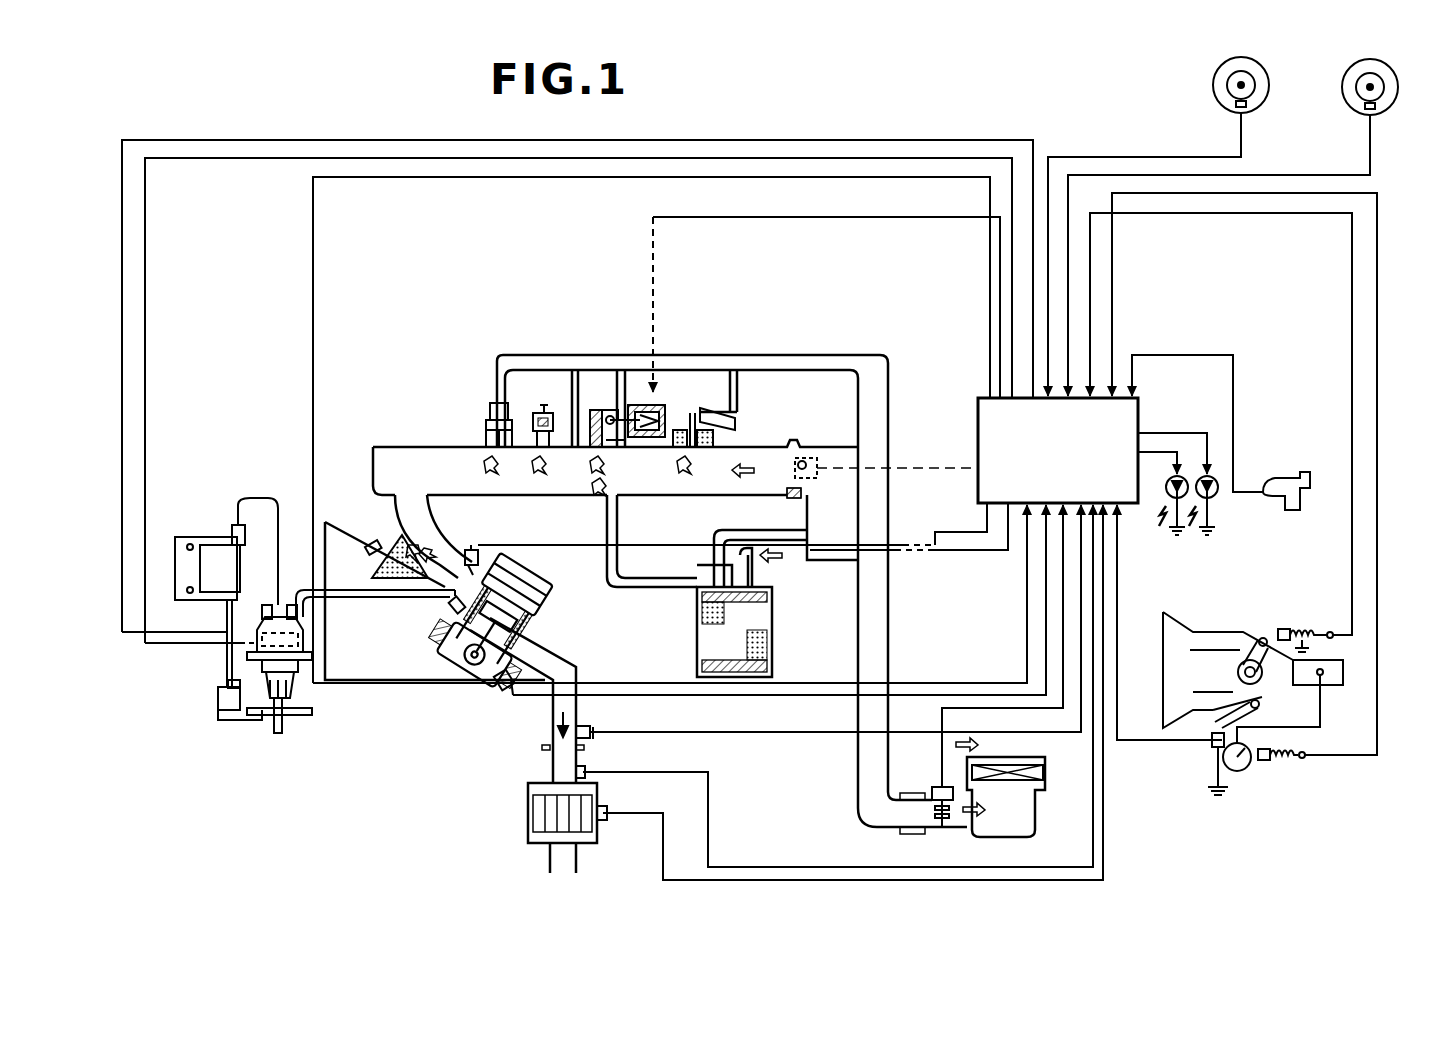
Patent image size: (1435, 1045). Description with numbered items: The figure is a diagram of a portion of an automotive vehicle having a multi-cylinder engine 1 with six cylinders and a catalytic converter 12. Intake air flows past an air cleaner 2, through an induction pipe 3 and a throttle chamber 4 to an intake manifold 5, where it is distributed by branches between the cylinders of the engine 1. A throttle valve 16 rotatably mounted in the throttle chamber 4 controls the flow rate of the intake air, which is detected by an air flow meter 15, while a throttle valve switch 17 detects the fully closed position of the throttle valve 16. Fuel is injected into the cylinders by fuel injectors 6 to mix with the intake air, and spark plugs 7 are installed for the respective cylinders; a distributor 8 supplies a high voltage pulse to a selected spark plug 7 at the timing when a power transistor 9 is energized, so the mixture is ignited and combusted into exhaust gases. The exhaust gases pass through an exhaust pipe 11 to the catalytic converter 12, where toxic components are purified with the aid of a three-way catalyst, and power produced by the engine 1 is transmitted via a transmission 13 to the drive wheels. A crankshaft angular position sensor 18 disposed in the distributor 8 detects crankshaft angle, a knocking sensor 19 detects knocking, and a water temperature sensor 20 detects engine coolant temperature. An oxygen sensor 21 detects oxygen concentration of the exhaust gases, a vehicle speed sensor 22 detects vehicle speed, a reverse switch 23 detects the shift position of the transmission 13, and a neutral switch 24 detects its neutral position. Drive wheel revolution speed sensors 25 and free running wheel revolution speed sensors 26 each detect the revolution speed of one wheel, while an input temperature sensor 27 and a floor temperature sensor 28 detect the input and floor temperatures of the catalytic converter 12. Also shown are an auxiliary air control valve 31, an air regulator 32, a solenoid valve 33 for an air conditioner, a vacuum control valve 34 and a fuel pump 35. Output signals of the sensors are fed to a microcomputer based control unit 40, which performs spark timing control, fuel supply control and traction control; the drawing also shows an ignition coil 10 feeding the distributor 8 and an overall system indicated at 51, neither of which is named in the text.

The multi-cylinder engine 1 is at (548, 594).
The air cleaner 2 is at (1018, 742).
The induction pipe 3 is at (858, 755).
The throttle chamber 4 is at (806, 458).
The intake manifold 5 is at (400, 446).
The fuel injectors 6 is at (483, 553).
The spark plugs 7 is at (452, 606).
The distributor 8 is at (302, 668).
The power transistor 9 is at (218, 703).
The ignition coil 10 is at (202, 537).
The exhaust pipe 11 is at (560, 672).
The catalytic converter 12 is at (528, 813).
The transmission 13 is at (1214, 640).
The air flow meter 15 is at (942, 830).
The throttle valve 16 is at (806, 490).
The throttle valve switch 17 is at (810, 475).
The crankshaft angular position sensor 18 is at (300, 645).
The knocking sensor 19 is at (512, 674).
The water temperature sensor 20 is at (382, 548).
The oxygen sensor 21 is at (592, 730).
The vehicle speed sensor 22 is at (1290, 762).
The reverse switch 23 is at (1212, 748).
The neutral switch 24 is at (1298, 629).
The drive wheel revolution speed sensors 25 is at (1232, 107).
The free running wheel revolution speed sensors 26 is at (1360, 112).
The input temperature sensor 27 is at (587, 770).
The floor temperature sensor 28 is at (607, 812).
The auxiliary air control valve 31 is at (592, 410).
The air regulator 32 is at (690, 408).
The solenoid valve for an air conditioner 33 is at (541, 412).
The vacuum control valve 34 is at (492, 415).
The fuel pump 35 is at (1292, 477).
The control unit 40 is at (1140, 418).
The engine control system 51 is at (1114, 828).